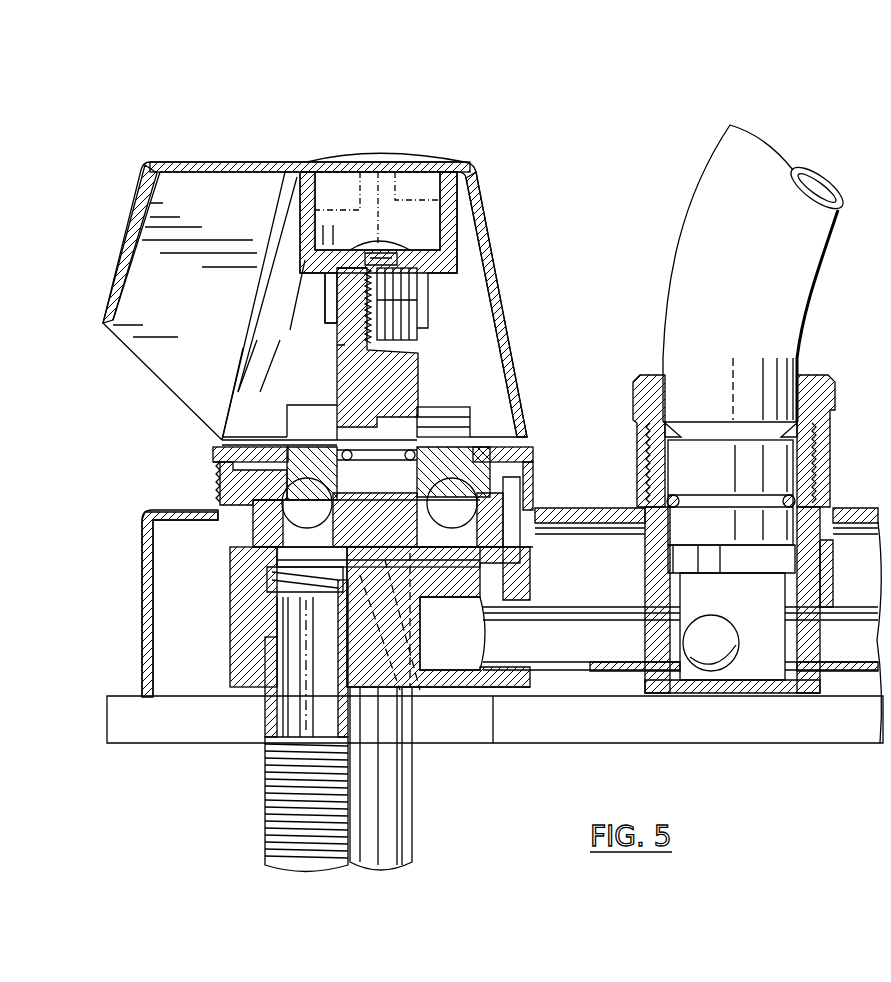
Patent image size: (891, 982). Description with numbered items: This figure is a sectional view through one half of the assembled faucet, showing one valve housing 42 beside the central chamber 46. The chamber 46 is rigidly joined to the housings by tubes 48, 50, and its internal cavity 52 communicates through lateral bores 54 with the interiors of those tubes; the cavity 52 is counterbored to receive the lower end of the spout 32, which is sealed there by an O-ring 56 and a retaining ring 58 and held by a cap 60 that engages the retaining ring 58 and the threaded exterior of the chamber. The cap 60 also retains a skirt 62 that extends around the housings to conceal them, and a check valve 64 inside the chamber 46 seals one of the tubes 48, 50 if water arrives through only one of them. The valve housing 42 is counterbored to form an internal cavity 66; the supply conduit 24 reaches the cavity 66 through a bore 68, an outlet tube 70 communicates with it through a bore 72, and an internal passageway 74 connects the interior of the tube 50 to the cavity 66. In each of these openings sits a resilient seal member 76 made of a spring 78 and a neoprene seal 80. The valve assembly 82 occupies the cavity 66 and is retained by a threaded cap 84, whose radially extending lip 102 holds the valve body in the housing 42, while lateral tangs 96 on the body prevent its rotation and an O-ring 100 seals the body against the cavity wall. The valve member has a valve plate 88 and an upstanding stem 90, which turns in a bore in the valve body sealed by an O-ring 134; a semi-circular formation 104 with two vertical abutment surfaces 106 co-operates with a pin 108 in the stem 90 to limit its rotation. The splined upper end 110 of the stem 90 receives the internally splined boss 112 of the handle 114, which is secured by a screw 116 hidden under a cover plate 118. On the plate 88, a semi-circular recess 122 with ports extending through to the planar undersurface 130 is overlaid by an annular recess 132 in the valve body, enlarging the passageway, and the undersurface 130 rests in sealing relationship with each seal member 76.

The hot water conduit 24 is at (398, 818).
The spout 32 is at (668, 290).
The valve housing 42 is at (211, 617).
The central chamber 46 is at (830, 578).
The tube 48 is at (850, 672).
The tube 50 is at (612, 696).
The internal cavity 52 is at (668, 470).
The lateral bores 54 is at (680, 638).
The O-ring 56 is at (685, 490).
The retaining ring 58 is at (668, 425).
The cap 60 is at (632, 380).
The skirt 62 is at (645, 548).
The check valve 64 is at (720, 628).
The internal cavity 66 is at (262, 525).
The bore 68 is at (438, 642).
The outlet tube 70 is at (263, 815).
The bore 72 is at (287, 618).
The internal passageway 74 is at (452, 633).
The resilient seal member 76 is at (312, 640).
The spring 78 is at (290, 605).
The neoprene seal 80 is at (270, 555).
The valve assembly 82 is at (311, 375).
The threaded cap 84 is at (218, 465).
The valve plate 88 is at (512, 560).
The stem 90 is at (400, 378).
The lateral tangs 96 is at (530, 465).
The O-ring 100 is at (225, 487).
The radially extending lip 102 is at (225, 437).
The semi-circular formation 104 is at (293, 396).
The vertical abutment surfaces 106 is at (447, 412).
The pin 108 is at (475, 418).
The splined end 110 is at (408, 330).
The internally splined boss 112 is at (330, 287).
The handle 114 is at (485, 262).
The screw 116 is at (378, 247).
The cover plate 118 is at (345, 152).
The semi-circular recess 122 is at (386, 503).
The undersurface 130 is at (440, 563).
The annular recess 132 is at (307, 503).
The O-ring 134 is at (335, 437).